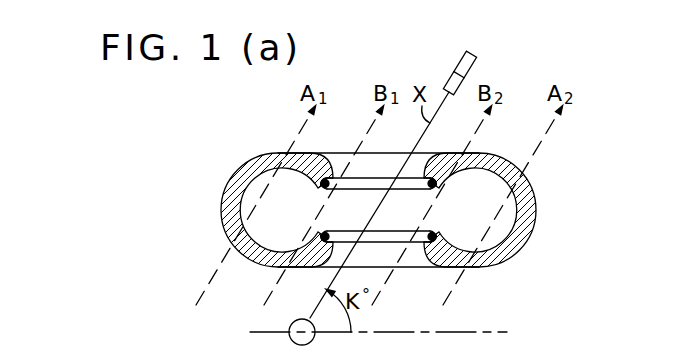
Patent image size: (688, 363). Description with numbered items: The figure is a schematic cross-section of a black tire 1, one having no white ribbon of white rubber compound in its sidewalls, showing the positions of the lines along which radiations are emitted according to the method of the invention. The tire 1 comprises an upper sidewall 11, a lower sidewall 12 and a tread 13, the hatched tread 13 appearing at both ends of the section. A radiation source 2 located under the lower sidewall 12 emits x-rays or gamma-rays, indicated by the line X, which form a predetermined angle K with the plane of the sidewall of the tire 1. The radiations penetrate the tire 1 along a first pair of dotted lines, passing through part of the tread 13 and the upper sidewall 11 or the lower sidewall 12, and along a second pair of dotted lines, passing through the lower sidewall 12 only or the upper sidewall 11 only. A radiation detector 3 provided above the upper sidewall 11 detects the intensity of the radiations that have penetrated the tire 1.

The tire 1 is at (535, 240).
The radiation source 2 is at (310, 343).
The radiation detector 3 is at (456, 66).
The sidewall 11 is at (268, 152).
The sidewall 12 is at (487, 267).
The tread 13 is at (221, 207).